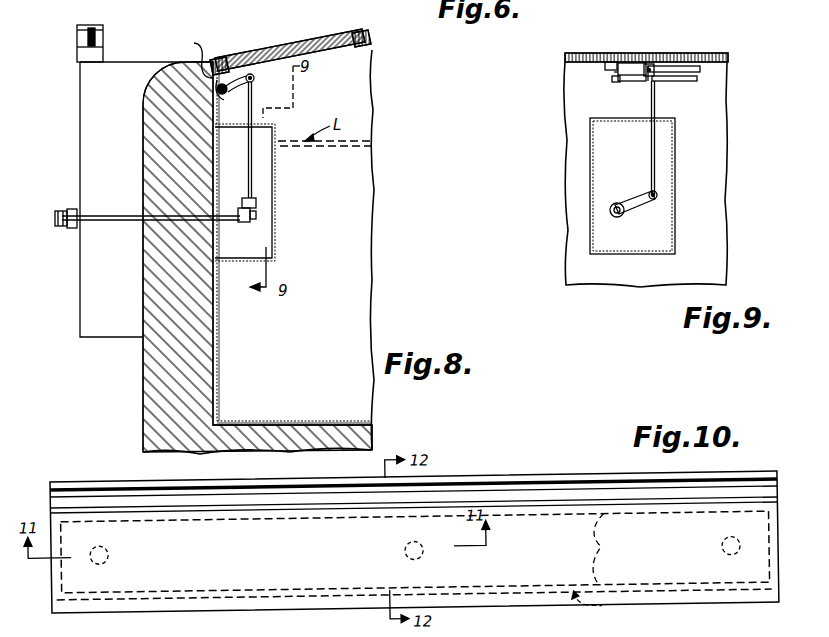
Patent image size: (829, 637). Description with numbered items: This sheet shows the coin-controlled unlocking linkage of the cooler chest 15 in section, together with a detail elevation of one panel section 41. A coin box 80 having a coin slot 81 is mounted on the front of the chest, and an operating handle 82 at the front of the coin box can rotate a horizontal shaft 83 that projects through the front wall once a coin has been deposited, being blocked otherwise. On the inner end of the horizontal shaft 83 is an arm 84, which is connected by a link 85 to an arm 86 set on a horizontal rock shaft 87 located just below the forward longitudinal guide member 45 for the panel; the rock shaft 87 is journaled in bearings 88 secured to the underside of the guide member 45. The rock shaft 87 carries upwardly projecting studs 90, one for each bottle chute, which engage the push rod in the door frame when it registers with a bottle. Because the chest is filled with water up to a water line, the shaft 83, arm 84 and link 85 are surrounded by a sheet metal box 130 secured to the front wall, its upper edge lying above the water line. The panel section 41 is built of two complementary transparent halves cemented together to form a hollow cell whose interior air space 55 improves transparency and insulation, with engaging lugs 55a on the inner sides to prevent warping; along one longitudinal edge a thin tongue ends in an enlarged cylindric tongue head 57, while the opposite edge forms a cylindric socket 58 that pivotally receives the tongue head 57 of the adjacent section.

In FIG. 8, the cooler chest 15 is at (142, 381).
In FIG. 8, the coin box 80 is at (80, 114).
In FIG. 8, the coin slot 81 is at (95, 28).
In FIG. 8, the operating handle 82 is at (61, 209).
In FIG. 8, the horizontal shaft 83 is at (158, 222).
In FIG. 9, the horizontal shaft 83 is at (614, 217).
In FIG. 8, the arm 84 is at (245, 205).
In FIG. 9, the arm 84 is at (640, 193).
In FIG. 8, the link 85 is at (248, 141).
In FIG. 9, the link 85 is at (651, 138).
In FIG. 8, the arm 86 is at (255, 81).
In FIG. 9, the arm 86 is at (647, 80).
In FIG. 8, the rock shaft 87 is at (232, 100).
In FIG. 9, the rock shaft 87 is at (678, 68).
In FIG. 9, the bearings 88 is at (626, 62).
In FIG. 8, the studs 90 is at (189, 56).
In FIG. 8, the longitudinal member 45 is at (220, 56).
In FIG. 9, the longitudinal member 45 is at (600, 40).
In FIG. 8, the sheet metal box 130 is at (276, 220).
In FIG. 9, the sheet metal box 130 is at (676, 172).
In FIG. 10, the panel section 41 is at (345, 592).
In FIG. 10, the interior air space 55 is at (414, 555).
In FIG. 10, the engaging lugs 55a is at (108, 553).
In FIG. 10, the tongue head 57 is at (478, 480).
In FIG. 10, the cylindric socket 58 is at (597, 604).